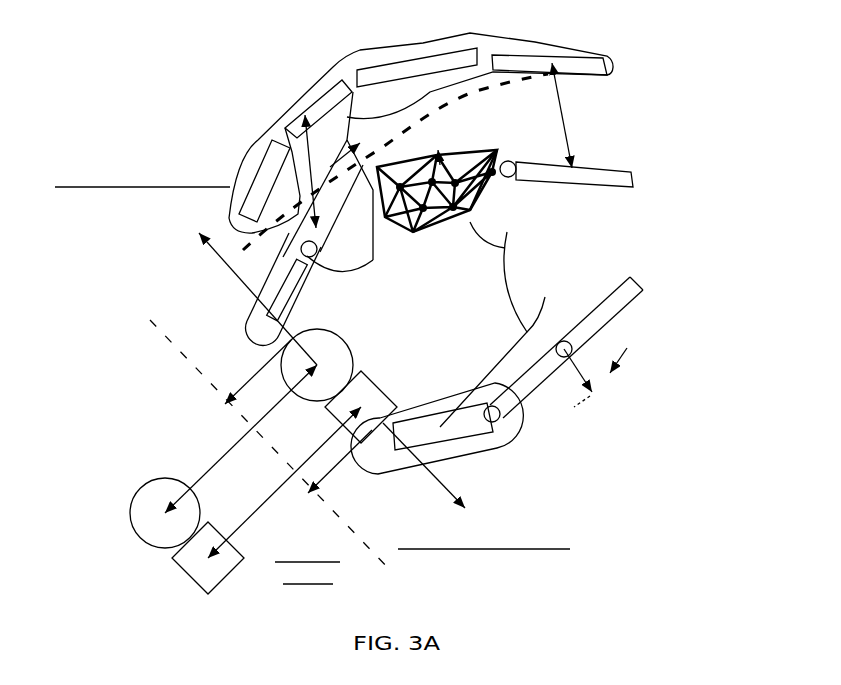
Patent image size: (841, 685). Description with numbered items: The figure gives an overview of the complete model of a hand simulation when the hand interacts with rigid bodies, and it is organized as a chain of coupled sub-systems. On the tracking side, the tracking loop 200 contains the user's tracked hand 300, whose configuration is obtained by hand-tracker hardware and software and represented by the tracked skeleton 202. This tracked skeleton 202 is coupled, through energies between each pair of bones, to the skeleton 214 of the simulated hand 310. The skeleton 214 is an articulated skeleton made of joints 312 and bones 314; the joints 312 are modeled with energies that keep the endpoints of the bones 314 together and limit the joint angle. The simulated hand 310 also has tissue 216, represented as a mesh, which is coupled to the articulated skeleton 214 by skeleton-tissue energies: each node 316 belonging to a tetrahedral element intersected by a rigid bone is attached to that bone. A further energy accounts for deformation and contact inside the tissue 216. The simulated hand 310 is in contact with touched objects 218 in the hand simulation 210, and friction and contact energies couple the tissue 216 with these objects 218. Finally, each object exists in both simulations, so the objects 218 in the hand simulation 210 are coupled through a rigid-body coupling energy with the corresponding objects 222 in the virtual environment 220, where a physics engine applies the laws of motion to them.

The tracking loop 200 is at (130, 155).
The tracked hand 300 is at (295, 93).
The tracked skeleton 202 is at (569, 56).
The tissue 216 is at (470, 147).
The node 316 is at (492, 181).
The joint 312 is at (510, 161).
The bone 314 is at (602, 175).
The skeleton of the simulated hand 214 is at (637, 284).
The simulated hand 310 is at (500, 293).
The touched object 218 is at (366, 390).
The object in the virtual environment 222 is at (188, 573).
The virtual environment 220 is at (268, 582).
The hand simulation 210 is at (455, 550).